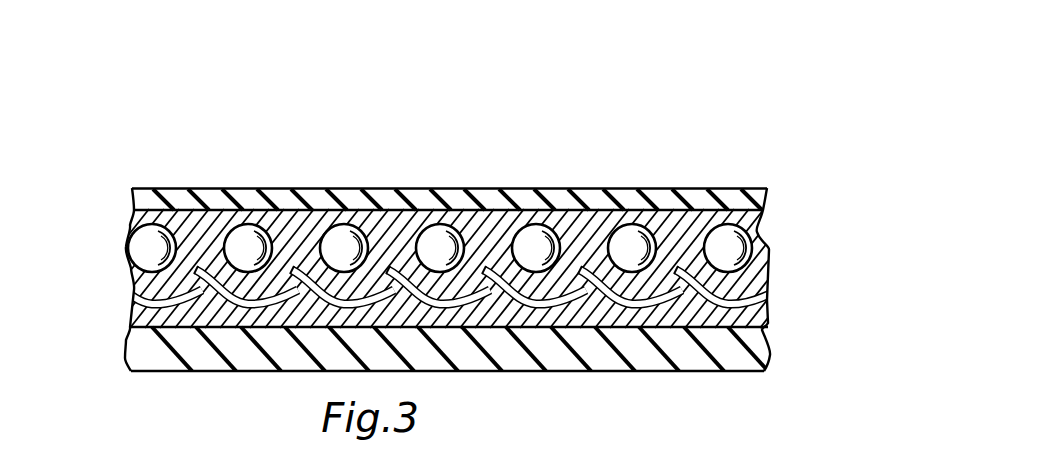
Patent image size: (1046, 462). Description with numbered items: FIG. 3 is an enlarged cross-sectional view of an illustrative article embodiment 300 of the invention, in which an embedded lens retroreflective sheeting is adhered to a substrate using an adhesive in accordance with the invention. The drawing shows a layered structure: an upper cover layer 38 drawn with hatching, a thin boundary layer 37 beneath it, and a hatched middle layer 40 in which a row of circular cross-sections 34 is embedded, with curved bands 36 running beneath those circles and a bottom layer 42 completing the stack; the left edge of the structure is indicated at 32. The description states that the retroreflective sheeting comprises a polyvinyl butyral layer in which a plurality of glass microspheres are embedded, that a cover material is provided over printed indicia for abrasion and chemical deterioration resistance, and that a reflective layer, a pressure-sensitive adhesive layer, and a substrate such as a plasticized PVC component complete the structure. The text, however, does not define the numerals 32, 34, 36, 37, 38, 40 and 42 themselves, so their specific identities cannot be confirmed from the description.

The article embodiment 300 is at (717, 133).
The edge of web layer 32 is at (138, 220).
The tubular fibers 34 is at (735, 235).
The connecting yarns 36 is at (153, 333).
The adhesive layer 37 is at (423, 208).
The top cover layer 38 is at (548, 193).
The matrix layer 40 is at (758, 310).
The bottom backing layer 42 is at (750, 345).